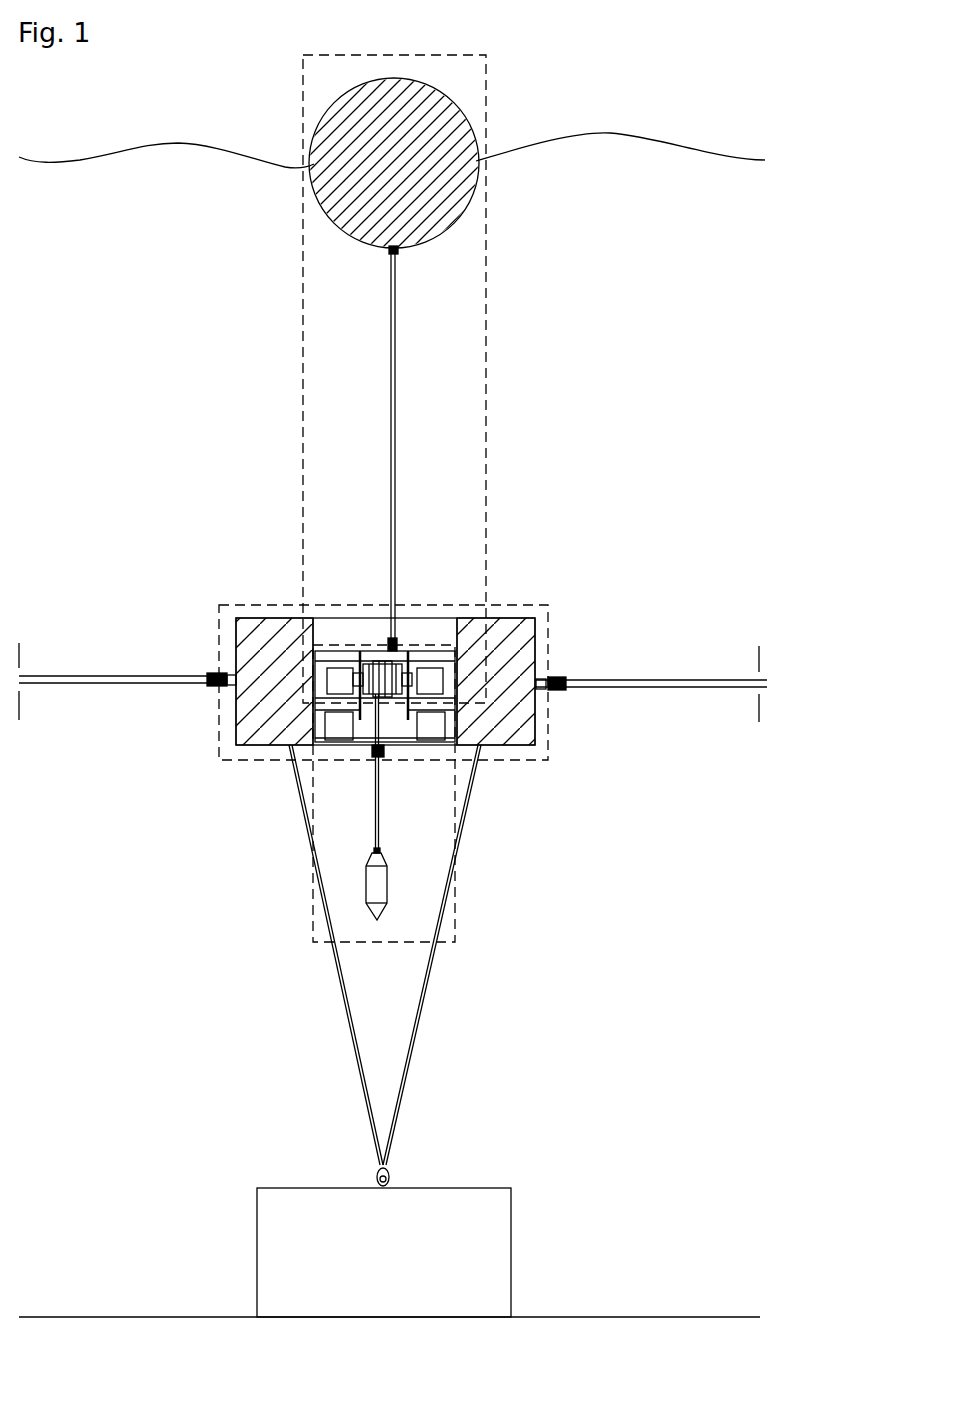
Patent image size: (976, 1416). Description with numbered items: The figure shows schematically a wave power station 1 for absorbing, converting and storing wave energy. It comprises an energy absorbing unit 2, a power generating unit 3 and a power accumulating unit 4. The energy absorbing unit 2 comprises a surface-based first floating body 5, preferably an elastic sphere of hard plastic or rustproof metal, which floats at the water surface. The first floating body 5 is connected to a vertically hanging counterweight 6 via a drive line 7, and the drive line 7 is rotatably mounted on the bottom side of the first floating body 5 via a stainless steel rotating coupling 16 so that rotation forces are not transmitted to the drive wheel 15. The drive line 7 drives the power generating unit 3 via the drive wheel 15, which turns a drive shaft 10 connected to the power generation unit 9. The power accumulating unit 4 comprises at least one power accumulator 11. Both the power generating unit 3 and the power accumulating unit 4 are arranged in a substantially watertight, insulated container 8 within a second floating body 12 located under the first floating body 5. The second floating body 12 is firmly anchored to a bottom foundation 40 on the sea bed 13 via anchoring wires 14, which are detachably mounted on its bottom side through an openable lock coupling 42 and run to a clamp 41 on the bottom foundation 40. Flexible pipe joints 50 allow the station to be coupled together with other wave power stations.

The wave power station 1 is at (712, 348).
The energy absorbing unit 2 is at (490, 377).
The power generating unit 3 is at (413, 638).
The power accumulating unit 4 is at (512, 602).
The first floating body 5 is at (424, 245).
The counterweight 6 is at (389, 885).
The drive line 7 is at (397, 443).
The container 8 is at (339, 655).
The power generation unit 9 is at (426, 666).
The drive shaft 10 is at (381, 757).
The power accumulator 11 is at (438, 745).
The second floating body 12 is at (262, 748).
The sea bed 13 is at (620, 1315).
The anchoring wire 14 is at (433, 972).
The drive wheel 15 is at (385, 663).
The rotating coupling 16 is at (399, 256).
The bottom foundation 40 is at (480, 1188).
The clamp 41 is at (390, 1172).
The lock coupling 42 is at (482, 750).
The flexible pipe joint 50 is at (604, 677).